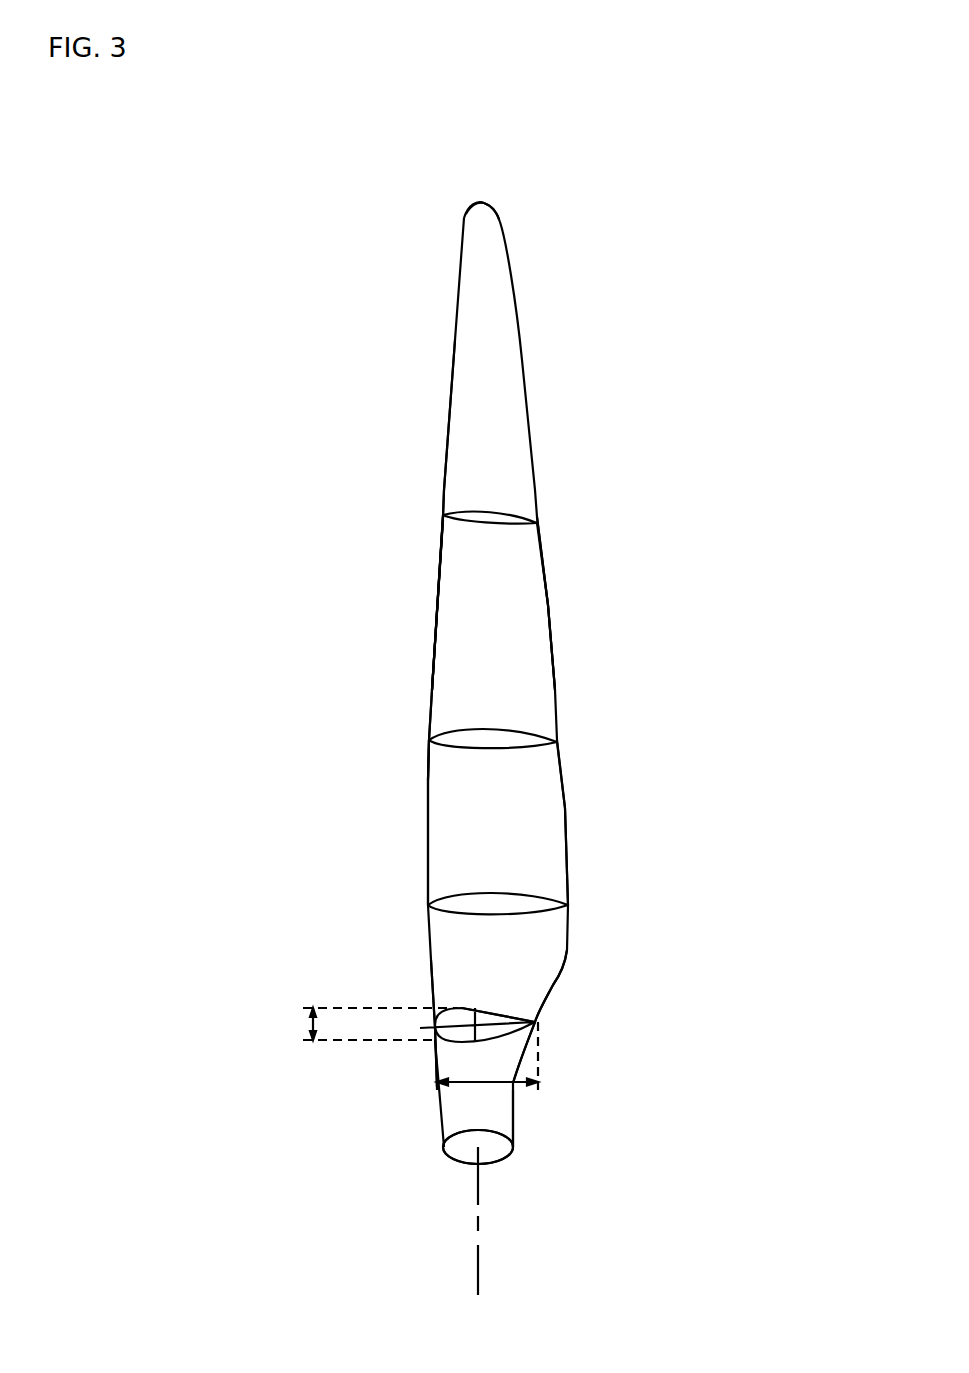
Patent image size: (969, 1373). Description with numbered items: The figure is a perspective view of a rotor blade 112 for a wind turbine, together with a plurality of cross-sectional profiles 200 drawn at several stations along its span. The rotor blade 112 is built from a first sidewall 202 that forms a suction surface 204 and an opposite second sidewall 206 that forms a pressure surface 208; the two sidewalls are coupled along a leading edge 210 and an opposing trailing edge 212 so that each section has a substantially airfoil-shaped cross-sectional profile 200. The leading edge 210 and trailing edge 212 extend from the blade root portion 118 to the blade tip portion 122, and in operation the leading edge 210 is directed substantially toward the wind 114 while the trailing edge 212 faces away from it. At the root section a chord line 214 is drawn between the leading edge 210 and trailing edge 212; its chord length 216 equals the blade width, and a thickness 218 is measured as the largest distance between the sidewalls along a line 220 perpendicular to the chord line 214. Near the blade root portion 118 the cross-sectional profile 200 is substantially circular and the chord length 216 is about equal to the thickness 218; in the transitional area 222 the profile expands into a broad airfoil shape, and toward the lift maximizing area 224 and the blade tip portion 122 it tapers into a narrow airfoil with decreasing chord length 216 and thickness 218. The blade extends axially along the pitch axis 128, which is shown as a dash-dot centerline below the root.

The rotor blade 112 is at (268, 280).
The wind 114 is at (235, 677).
The blade root portion 118 is at (513, 1140).
The blade tip portion 122 is at (492, 205).
The pitch axis 128 is at (478, 1246).
The cross-sectional profile 200 is at (443, 516).
The first sidewall 202 is at (462, 623).
The suction surface 204 is at (475, 584).
The second sidewall 206 is at (522, 658).
The pressure surface 208 is at (528, 604).
The leading edge 210 is at (428, 808).
The trailing edge 212 is at (565, 808).
The chord line 214 is at (535, 1023).
The chord length 216 is at (490, 1087).
The thickness 218 is at (313, 1024).
The line 220 is at (498, 1013).
The transitional area 222 is at (311, 959).
The lift maximizing area 224 is at (300, 662).